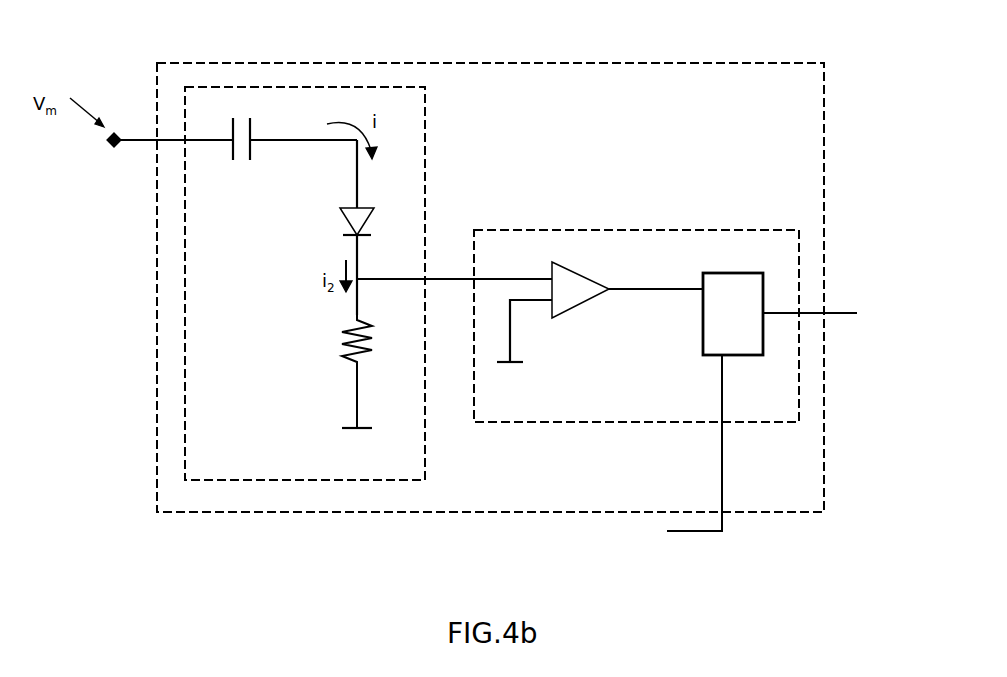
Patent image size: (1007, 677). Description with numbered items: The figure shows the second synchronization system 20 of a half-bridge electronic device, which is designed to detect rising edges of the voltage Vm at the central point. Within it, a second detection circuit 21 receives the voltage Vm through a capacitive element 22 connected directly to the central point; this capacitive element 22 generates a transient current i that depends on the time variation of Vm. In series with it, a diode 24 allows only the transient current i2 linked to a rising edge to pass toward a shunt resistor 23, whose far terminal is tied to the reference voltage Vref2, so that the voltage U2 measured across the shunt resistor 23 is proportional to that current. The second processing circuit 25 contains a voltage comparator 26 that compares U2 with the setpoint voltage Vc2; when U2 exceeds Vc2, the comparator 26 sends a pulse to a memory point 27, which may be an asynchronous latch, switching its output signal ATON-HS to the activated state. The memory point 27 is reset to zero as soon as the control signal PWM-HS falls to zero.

The second synchronization system 20 is at (485, 57).
The second detection circuit 21 is at (178, 287).
The capacitive element 22 is at (232, 172).
The shunt resistor 23 is at (343, 338).
The diode 24 is at (348, 222).
The second processing circuit 25 is at (570, 224).
The voltage comparator 26 is at (580, 306).
The memory point 27 is at (700, 315).